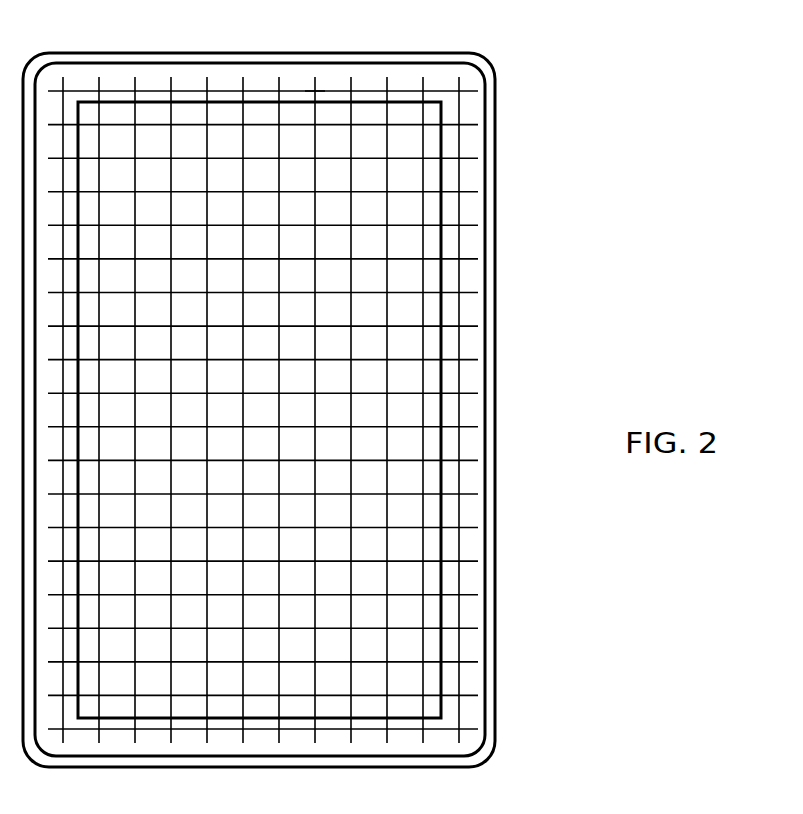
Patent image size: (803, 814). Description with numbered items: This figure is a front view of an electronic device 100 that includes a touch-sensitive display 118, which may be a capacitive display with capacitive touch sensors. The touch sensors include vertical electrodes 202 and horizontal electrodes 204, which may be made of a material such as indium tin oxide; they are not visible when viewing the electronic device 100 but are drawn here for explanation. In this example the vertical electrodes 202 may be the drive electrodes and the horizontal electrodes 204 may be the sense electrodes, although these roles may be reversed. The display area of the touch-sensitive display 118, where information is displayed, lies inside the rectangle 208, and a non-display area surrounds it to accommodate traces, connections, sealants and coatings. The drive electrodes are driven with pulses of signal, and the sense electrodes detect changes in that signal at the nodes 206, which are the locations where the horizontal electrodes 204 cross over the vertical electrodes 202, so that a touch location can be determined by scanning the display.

The electronic device 100 is at (549, 779).
The touch-sensitive display 118 is at (485, 338).
The vertical electrodes 202 is at (421, 80).
The horizontal electrodes 204 is at (467, 493).
The nodes 206 is at (315, 90).
The rectangle 208 is at (441, 177).